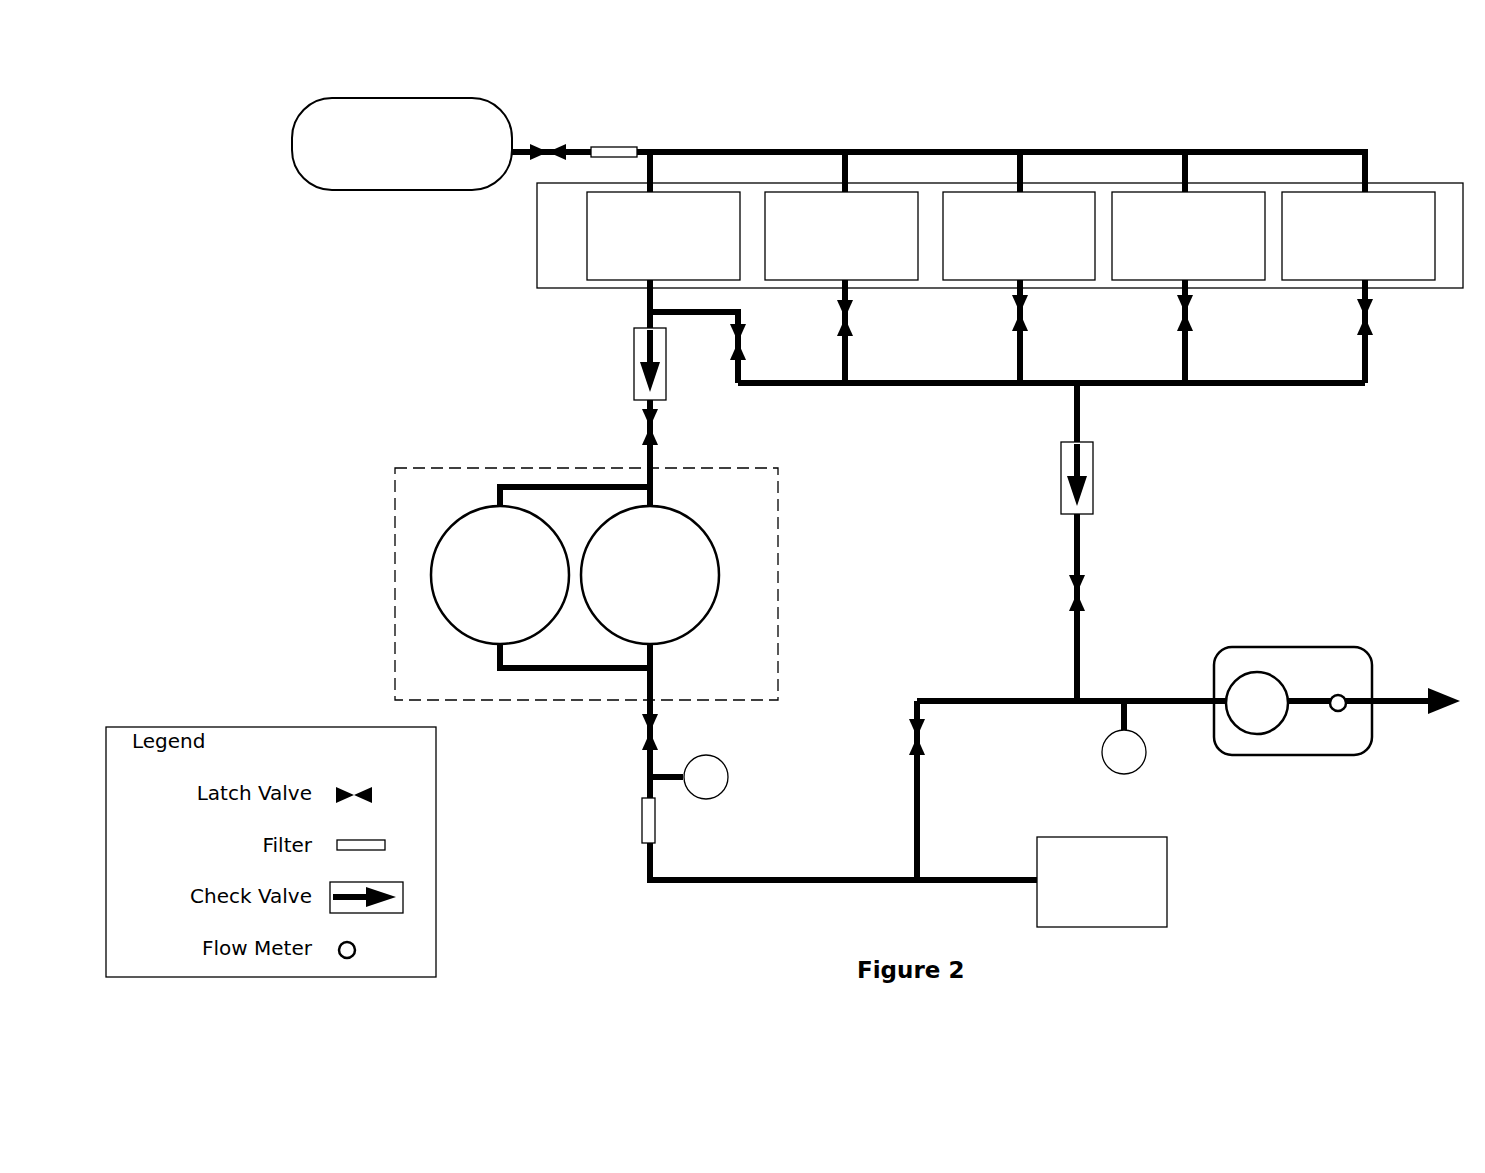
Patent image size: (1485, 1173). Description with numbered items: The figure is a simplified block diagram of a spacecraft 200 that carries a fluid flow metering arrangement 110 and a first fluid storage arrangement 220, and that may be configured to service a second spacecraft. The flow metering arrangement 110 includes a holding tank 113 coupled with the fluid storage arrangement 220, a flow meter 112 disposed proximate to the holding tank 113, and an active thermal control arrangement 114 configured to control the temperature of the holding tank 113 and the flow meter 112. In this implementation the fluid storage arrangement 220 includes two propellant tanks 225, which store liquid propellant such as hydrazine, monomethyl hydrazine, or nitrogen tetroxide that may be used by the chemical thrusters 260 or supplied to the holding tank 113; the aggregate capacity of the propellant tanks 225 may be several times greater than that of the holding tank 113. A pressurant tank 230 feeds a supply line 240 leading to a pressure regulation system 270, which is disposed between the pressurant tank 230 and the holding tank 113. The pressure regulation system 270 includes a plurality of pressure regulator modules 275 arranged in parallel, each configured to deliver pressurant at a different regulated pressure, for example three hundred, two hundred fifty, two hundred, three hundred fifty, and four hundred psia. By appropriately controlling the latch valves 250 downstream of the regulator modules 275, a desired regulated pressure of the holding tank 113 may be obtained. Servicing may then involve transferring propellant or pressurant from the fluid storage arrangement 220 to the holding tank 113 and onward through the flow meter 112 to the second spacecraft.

The spacecraft 200 is at (268, 84).
The pressurant tank 230 is at (383, 193).
The pressurant supply line 240 is at (876, 148).
The pressure regulation system 270 is at (537, 270).
The pressure regulator modules 275 is at (1011, 236).
The latch valve 250 is at (643, 728).
The fluid storage arrangement 220 is at (395, 522).
The propellant tanks 225 is at (575, 577).
The fluid flow metering arrangement 110 is at (1343, 594).
The active thermal control arrangement 114 is at (1372, 663).
The holding tank 113 is at (1258, 735).
The flow meter 112 is at (1342, 712).
The chemical thrusters 260 is at (1102, 882).